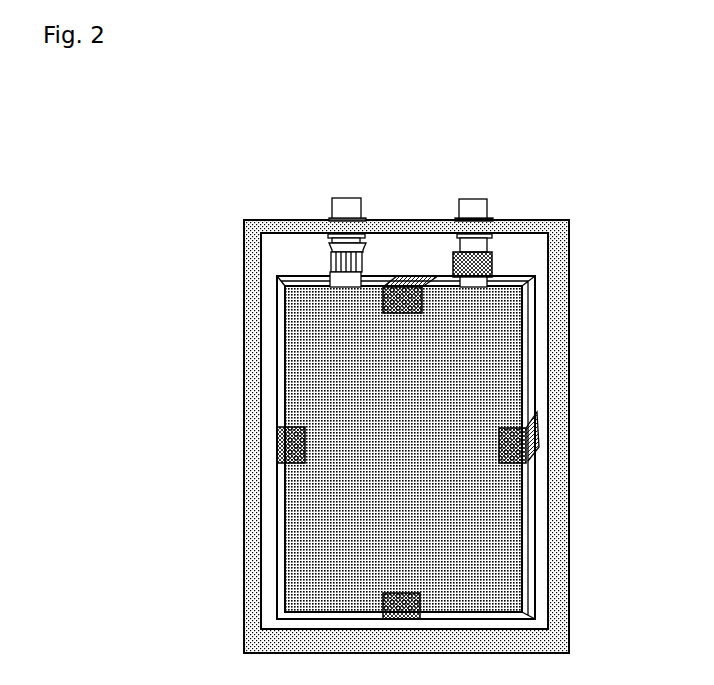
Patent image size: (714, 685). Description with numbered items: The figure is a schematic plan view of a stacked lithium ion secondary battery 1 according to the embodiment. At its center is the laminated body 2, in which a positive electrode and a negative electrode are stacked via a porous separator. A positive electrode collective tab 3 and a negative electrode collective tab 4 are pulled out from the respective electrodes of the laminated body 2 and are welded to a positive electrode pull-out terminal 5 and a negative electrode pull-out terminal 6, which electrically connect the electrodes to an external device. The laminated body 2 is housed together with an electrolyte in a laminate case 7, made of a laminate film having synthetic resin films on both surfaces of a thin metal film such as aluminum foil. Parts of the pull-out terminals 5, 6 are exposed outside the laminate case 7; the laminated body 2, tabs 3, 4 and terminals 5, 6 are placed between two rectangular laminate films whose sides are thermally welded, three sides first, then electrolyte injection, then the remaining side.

The stacked lithium ion secondary battery 1 is at (468, 90).
The laminated body 2 is at (272, 525).
The positive electrode collective tab 3 is at (501, 260).
The negative electrode collective tab 4 is at (321, 259).
The positive electrode pull-out terminal 5 is at (474, 203).
The negative electrode pull-out terminal 6 is at (347, 203).
The laminate case 7 is at (562, 388).